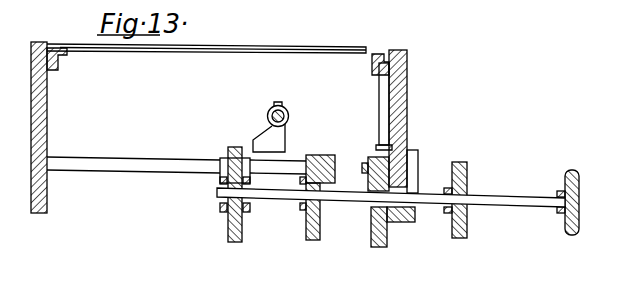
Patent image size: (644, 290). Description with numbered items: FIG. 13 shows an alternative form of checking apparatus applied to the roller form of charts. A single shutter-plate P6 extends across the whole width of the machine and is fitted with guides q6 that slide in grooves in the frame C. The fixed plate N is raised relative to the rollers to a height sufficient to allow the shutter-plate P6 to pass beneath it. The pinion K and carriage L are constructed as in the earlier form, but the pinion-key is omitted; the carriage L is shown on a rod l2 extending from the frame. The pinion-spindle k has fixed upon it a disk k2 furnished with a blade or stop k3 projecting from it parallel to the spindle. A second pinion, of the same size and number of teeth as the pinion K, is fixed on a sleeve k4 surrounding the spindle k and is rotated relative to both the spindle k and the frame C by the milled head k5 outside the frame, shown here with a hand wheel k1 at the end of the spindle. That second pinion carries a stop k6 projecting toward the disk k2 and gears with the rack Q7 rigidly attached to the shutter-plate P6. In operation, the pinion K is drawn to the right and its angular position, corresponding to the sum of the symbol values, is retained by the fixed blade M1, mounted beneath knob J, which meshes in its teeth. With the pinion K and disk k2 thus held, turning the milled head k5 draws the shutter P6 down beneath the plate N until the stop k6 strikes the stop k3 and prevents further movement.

The fixed plate N is at (266, 24).
The shutter-plate P6 is at (240, 52).
The frame C is at (407, 97).
The guides q6 is at (58, 67).
The rack Q7 is at (378, 147).
The knob J is at (274, 110).
The fixed blade M1 is at (268, 136).
The rod l2 is at (178, 163).
The carriage L is at (219, 206).
The pinion K is at (242, 232).
The pinion-spindle k is at (522, 188).
The hand wheel k1 is at (565, 227).
The disk k2 is at (320, 236).
The blade or stop k3 is at (332, 157).
The sleeve k4 is at (426, 171).
The milled head k5 is at (466, 217).
The stop k6 is at (376, 152).